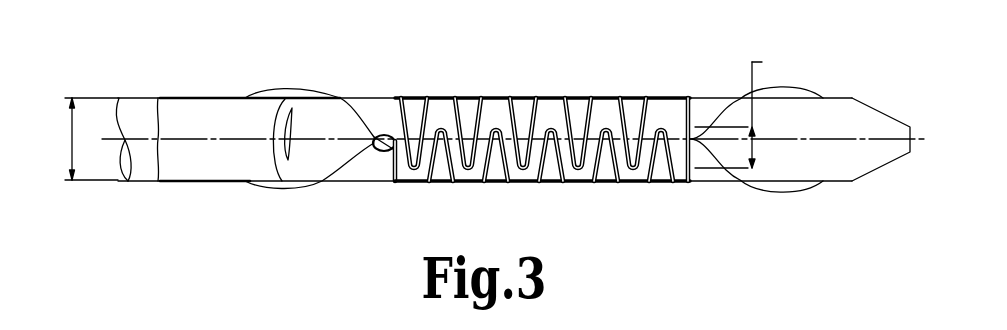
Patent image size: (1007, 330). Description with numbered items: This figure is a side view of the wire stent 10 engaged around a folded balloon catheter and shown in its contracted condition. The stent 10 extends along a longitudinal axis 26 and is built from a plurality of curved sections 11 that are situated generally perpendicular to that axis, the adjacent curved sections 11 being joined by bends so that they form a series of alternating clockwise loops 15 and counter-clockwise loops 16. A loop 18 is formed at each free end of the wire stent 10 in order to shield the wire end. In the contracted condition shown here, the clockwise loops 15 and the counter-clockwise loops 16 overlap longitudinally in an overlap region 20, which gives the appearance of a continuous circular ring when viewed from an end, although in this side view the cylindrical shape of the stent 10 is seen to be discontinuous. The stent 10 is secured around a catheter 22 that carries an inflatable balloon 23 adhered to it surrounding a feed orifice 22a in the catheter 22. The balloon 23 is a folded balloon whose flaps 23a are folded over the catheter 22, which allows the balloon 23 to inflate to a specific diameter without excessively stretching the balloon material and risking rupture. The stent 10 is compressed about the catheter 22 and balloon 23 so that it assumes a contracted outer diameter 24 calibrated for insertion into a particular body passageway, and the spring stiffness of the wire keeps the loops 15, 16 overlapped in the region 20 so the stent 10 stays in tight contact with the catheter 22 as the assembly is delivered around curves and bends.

The wire stent 10 is at (525, 133).
The curved sections 11 is at (550, 97).
The clockwise loops 15 is at (476, 109).
The counter-clockwise loops 16 is at (503, 160).
The loop 18 is at (389, 152).
The overlap region 20 is at (738, 110).
The catheter 22 is at (143, 108).
The feed orifice 22a is at (292, 108).
The inflatable balloon 23 is at (238, 96).
The flaps 23a is at (348, 114).
The contracted outer diameter 24 is at (72, 150).
The longitudinal axis 26 is at (892, 137).